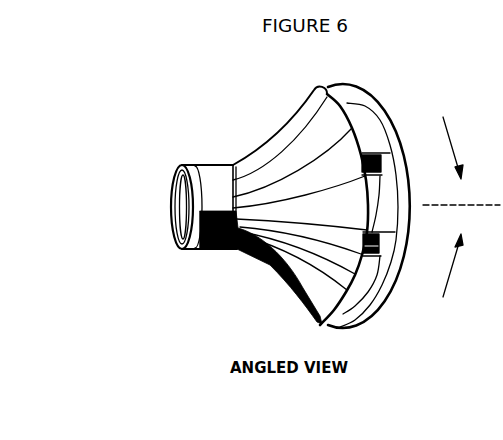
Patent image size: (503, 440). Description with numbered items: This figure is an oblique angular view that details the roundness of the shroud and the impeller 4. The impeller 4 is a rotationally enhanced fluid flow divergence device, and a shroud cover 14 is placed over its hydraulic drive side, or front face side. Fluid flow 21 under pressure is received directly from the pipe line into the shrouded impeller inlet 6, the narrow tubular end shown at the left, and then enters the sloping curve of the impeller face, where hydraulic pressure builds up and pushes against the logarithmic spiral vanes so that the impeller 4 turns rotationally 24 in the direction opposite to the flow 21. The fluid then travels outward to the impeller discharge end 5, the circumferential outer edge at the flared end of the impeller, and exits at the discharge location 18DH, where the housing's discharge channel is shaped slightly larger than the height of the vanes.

The impeller 4 is at (277, 137).
The impeller discharge end 5 is at (385, 159).
The impeller inlet 6 is at (169, 228).
The shroud cover 14 is at (302, 118).
The discharge location 18DH is at (398, 243).
The fluid flow 21 is at (289, 157).
The rotational direction 24 is at (446, 277).